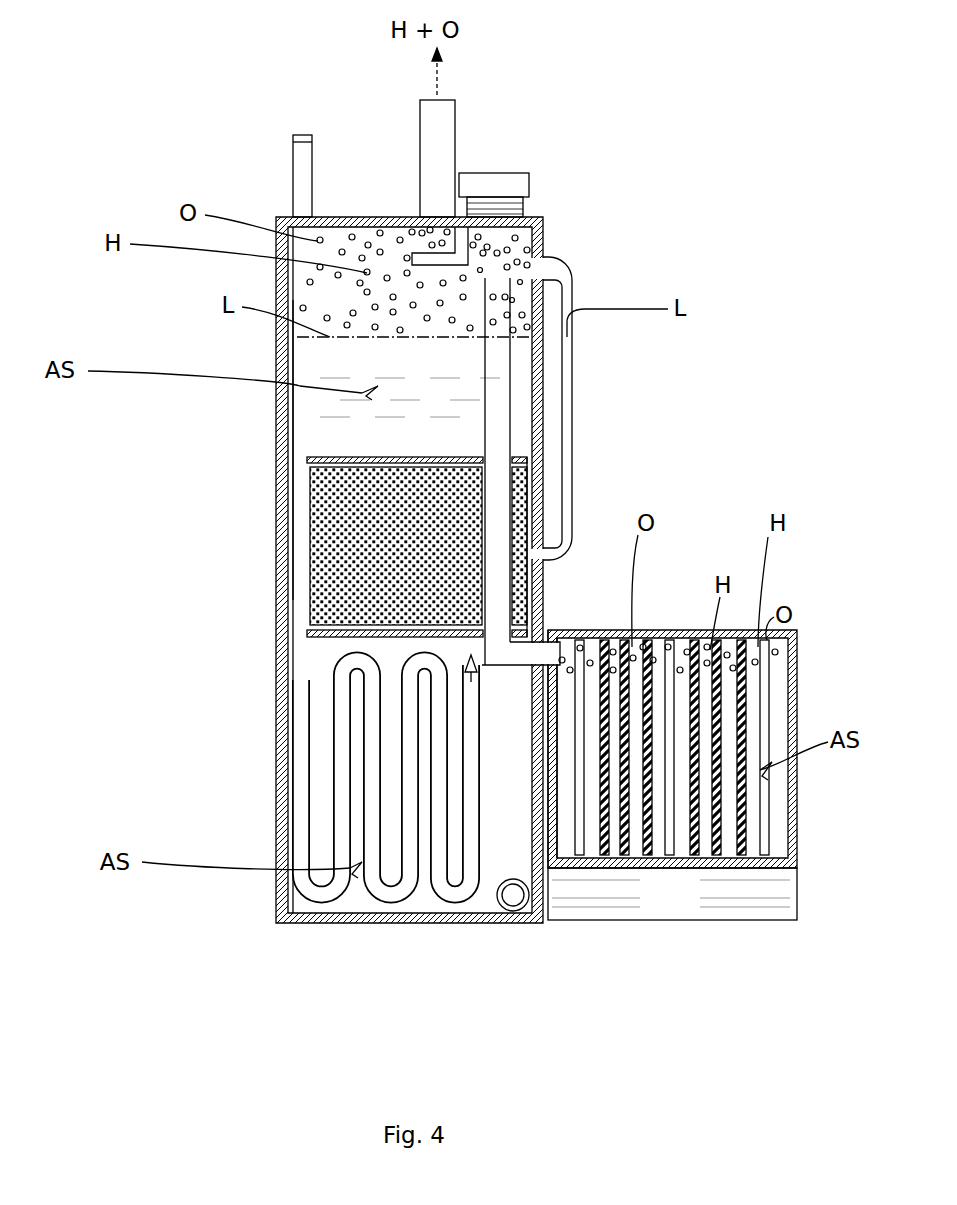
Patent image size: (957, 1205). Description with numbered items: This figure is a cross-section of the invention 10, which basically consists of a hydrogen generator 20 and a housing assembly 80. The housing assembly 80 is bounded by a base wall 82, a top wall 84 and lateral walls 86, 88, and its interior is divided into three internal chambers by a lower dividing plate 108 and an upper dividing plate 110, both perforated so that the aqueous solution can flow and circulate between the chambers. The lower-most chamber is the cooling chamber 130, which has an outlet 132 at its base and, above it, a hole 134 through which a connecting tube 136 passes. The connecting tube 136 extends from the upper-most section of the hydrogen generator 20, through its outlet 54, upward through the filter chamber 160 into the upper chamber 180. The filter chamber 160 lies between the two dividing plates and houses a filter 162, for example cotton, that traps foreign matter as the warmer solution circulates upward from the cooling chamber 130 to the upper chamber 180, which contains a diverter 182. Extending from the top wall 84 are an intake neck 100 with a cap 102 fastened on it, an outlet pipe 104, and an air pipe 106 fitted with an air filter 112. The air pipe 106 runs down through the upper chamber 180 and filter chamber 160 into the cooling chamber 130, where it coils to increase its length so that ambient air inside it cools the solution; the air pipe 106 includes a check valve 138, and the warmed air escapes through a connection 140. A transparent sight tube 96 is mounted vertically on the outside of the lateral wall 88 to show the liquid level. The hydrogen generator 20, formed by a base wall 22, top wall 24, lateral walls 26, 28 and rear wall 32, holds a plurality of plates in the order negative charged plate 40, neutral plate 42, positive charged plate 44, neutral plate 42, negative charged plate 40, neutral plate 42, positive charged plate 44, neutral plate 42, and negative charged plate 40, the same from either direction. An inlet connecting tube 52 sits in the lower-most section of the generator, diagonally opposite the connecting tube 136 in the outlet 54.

The hydrogen generator system 10 is at (186, 100).
The hydrogen generator 20 is at (697, 738).
The base wall 22 is at (780, 878).
The top wall 24 is at (695, 647).
The lateral wall 26 is at (603, 647).
The lateral wall 28 is at (808, 650).
The rear wall 32 is at (778, 716).
The negative charged plate 40 is at (764, 858).
The neutral plate 42 is at (741, 858).
The positive charged plate 44 is at (716, 858).
The inlet connecting tube 52 is at (546, 875).
The outlet 54 is at (568, 650).
The housing assembly 80 is at (262, 356).
The base wall 82 is at (312, 918).
The top wall 84 is at (393, 217).
The lateral wall 86 is at (292, 428).
The lateral wall 88 is at (543, 400).
The sight tube 96 is at (572, 297).
The intake neck 100 is at (523, 208).
The cap 102 is at (530, 180).
The outlet pipe 104 is at (457, 135).
The air pipe 106 is at (292, 186).
The lower dividing plate 108 is at (337, 632).
The upper dividing plate 110 is at (334, 463).
The air filter 112 is at (312, 134).
The cooling chamber 130 is at (423, 910).
The outlet 132 is at (513, 907).
The hole 134 is at (557, 665).
The connecting tube 136 is at (510, 444).
The check valve 138 is at (460, 673).
The connection 140 is at (303, 647).
The filter chamber 160 is at (317, 542).
The filter 162 is at (342, 548).
The upper chamber 180 is at (343, 296).
The diverter 182 is at (463, 238).